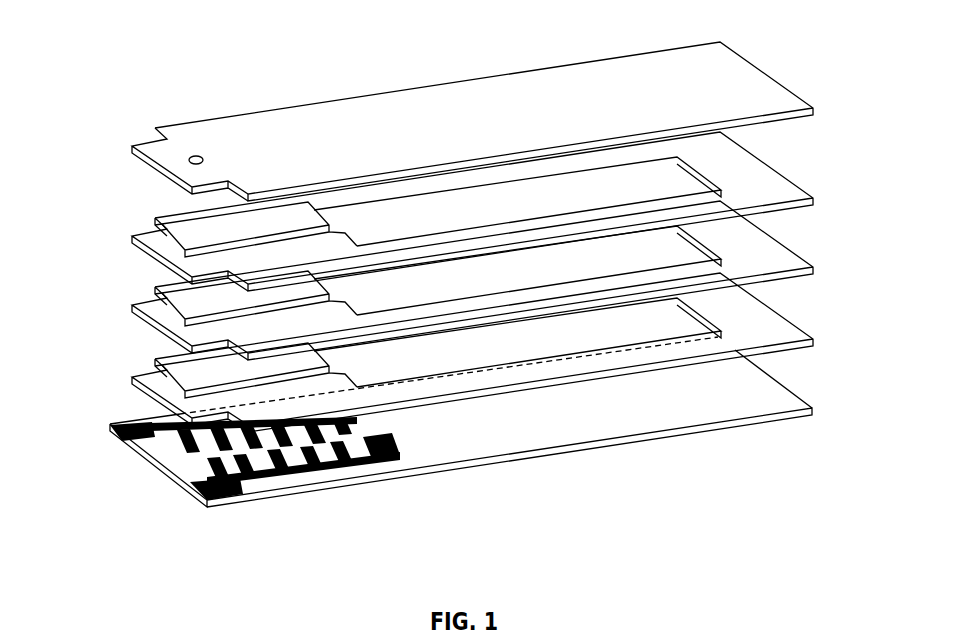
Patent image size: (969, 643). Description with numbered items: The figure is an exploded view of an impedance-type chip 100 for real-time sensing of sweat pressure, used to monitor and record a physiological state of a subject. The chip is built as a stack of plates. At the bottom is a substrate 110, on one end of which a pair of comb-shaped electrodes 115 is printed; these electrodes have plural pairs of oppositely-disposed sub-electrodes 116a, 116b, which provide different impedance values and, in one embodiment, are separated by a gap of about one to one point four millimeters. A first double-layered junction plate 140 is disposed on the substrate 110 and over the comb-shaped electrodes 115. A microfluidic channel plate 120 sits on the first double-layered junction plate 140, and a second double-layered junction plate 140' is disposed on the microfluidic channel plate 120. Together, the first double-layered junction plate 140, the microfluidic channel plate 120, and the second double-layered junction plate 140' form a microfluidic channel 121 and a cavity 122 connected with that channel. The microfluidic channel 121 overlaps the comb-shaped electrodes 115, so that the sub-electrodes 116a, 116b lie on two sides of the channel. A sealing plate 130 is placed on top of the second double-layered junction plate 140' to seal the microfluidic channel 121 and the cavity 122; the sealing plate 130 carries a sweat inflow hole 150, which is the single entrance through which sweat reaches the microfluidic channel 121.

The impedance-type chip 100 is at (800, 554).
The substrate 110 is at (460, 454).
The comb-shaped electrodes 115 is at (202, 494).
The sub-electrode 116a is at (138, 444).
The sub-electrode 116b is at (208, 477).
The microfluidic channel plate 120 is at (798, 263).
The microfluidic channel 121 is at (155, 221).
The cavity 122 is at (672, 180).
The sealing plate 130 is at (523, 114).
The first double-layered junction plate 140 is at (535, 352).
The second double-layered junction plate 140' is at (537, 211).
The sweat inflow hole 150 is at (197, 153).